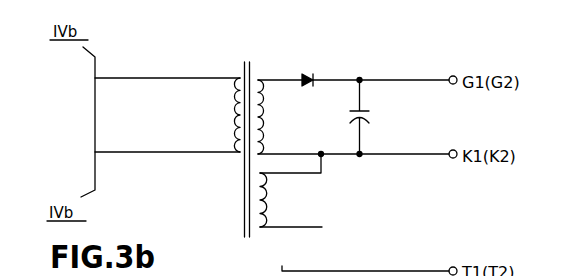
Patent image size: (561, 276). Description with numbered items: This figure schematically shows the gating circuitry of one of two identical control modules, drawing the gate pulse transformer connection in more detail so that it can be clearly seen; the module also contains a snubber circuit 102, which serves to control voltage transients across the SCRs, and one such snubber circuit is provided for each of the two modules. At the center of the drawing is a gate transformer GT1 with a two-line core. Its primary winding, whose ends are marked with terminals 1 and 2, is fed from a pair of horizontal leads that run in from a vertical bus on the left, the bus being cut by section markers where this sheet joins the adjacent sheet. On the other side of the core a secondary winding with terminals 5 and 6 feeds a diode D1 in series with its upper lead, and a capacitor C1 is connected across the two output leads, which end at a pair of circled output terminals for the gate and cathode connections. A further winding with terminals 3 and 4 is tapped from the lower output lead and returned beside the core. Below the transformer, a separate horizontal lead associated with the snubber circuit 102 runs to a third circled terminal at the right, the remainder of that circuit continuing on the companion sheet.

The snubber circuit 102 is at (320, 271).
The primary winding terminal 1 is at (167, 115).
The primary winding terminal 2 is at (167, 144).
The auxiliary winding terminal 3 is at (290, 190).
The auxiliary winding terminal 4 is at (291, 215).
The secondary winding terminal 5 is at (280, 116).
The secondary winding terminal 6 is at (289, 144).
The gate transformer GT1 is at (237, 139).
The diode D1 is at (373, 70).
The capacitor C1 is at (371, 117).